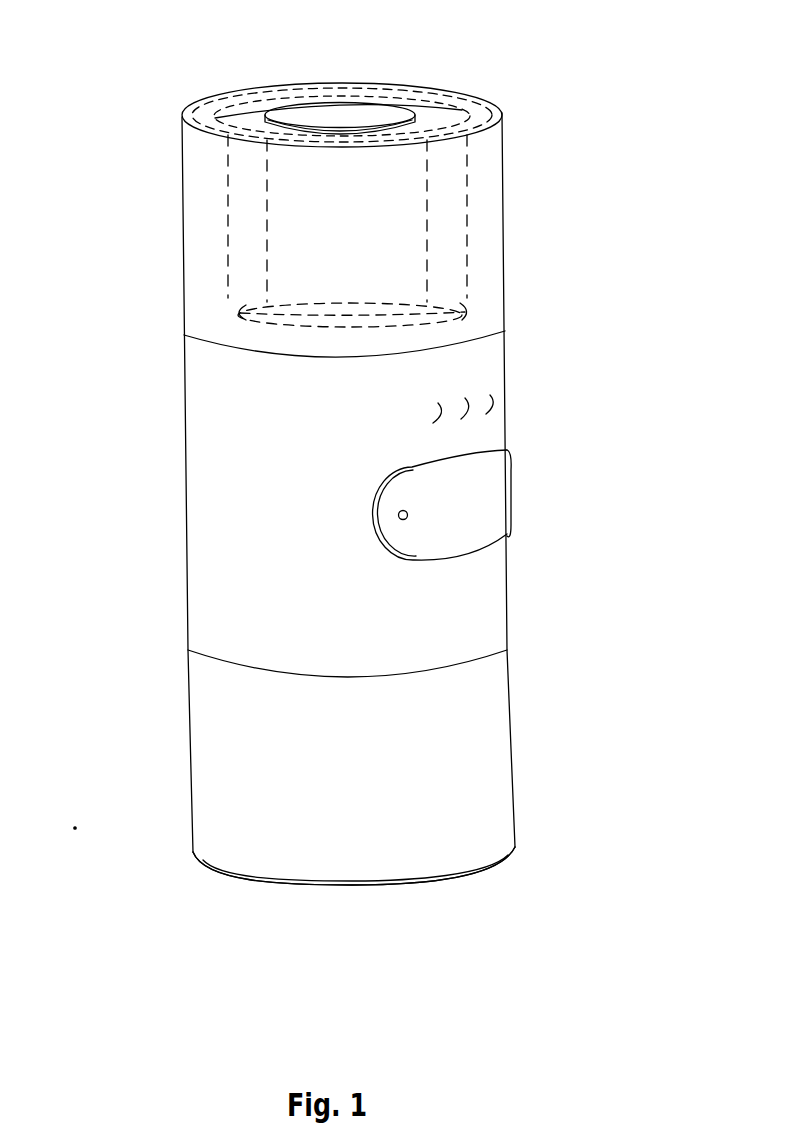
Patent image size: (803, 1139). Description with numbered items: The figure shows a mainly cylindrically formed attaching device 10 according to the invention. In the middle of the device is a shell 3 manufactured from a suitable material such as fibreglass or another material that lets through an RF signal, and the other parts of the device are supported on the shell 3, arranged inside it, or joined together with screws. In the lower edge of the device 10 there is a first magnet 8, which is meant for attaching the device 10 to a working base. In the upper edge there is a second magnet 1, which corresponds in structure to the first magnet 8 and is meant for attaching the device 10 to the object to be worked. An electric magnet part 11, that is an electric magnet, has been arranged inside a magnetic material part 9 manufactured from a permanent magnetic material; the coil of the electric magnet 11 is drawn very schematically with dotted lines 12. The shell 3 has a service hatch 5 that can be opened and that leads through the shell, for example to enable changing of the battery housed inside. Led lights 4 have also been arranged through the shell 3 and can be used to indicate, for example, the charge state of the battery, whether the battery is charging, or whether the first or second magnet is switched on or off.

The second magnet 1 is at (478, 222).
The shell 3 is at (202, 502).
The indicator lights 4 is at (488, 399).
The service hatch 5 is at (493, 513).
The first magnet 8 is at (483, 768).
The magnetic material part 9 is at (200, 170).
The attaching device 10 is at (622, 90).
The electric magnet part 11 is at (428, 118).
The dotted lines 12 is at (232, 273).